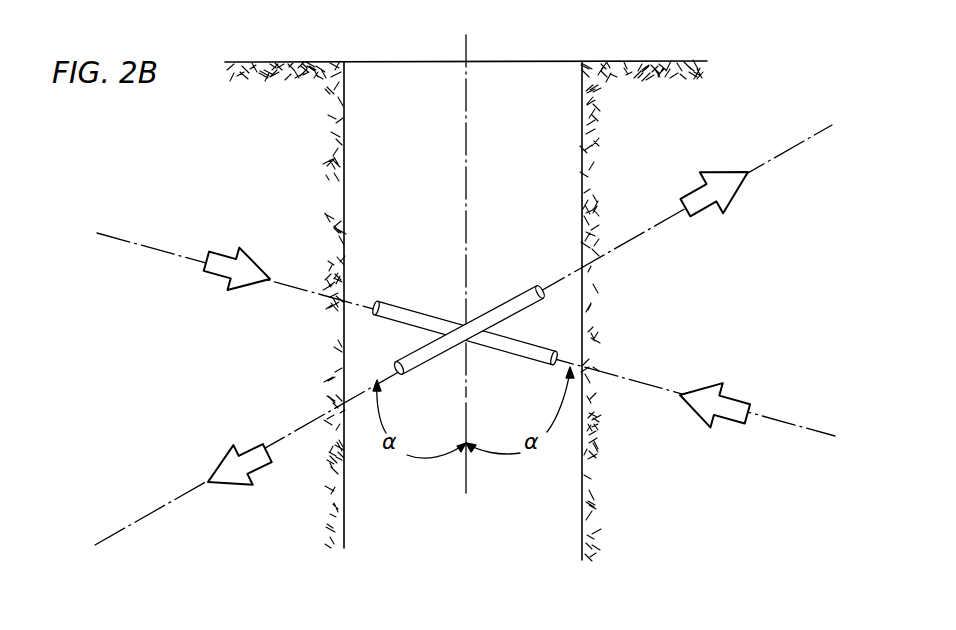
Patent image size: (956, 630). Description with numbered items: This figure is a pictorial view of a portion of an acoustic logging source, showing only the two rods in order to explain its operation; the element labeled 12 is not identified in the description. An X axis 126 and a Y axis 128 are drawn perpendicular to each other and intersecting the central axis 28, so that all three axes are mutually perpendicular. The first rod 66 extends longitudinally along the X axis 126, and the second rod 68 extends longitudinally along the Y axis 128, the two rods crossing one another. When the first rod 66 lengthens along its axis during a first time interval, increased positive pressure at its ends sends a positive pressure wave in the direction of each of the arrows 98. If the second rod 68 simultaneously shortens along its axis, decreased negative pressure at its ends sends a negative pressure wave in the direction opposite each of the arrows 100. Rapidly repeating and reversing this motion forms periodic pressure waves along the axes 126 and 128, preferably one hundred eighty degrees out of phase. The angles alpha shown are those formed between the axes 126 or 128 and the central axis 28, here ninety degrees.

The borehole 12 is at (562, 49).
The central axis 28 is at (467, 48).
The first rod 66 is at (430, 353).
The second rod 68 is at (525, 352).
The arrows 98 is at (727, 185).
The arrows 100 is at (213, 263).
The X axis 126 is at (120, 530).
The Y axis 128 is at (820, 430).